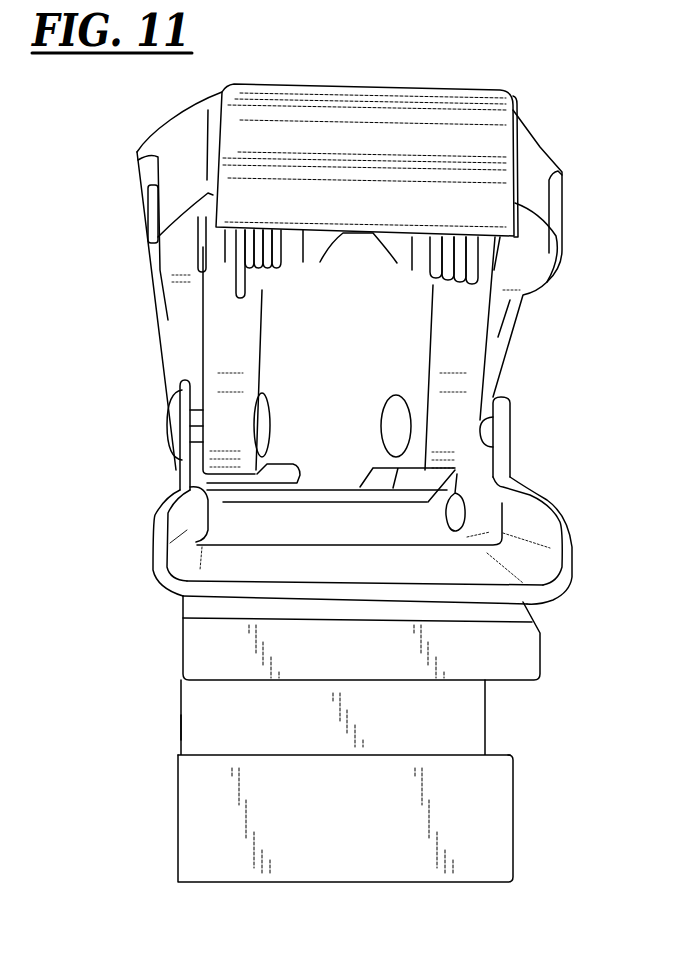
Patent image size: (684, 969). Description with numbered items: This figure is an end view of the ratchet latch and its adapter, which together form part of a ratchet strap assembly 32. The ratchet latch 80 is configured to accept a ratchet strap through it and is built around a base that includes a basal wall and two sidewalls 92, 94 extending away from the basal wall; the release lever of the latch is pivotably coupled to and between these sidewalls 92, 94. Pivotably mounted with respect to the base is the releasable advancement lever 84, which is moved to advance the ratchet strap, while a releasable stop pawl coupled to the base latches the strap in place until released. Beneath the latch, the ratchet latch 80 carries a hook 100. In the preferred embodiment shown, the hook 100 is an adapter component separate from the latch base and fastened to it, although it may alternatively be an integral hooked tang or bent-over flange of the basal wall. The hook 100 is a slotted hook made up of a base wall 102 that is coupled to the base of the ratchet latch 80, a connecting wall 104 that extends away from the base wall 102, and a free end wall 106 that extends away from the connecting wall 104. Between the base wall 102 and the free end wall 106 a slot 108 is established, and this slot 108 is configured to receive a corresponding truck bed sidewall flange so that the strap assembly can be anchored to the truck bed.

The ratchet strap assembly 32 is at (390, 131).
The releasable advancement lever 84 is at (516, 106).
The ratchet latch 80 is at (378, 454).
The sidewall 92 is at (533, 495).
The sidewall 94 is at (157, 512).
The hook 100 is at (378, 736).
The base wall 102 is at (180, 652).
The connecting wall 104 is at (180, 710).
The free end wall 106 is at (178, 830).
The slot 108 is at (195, 728).